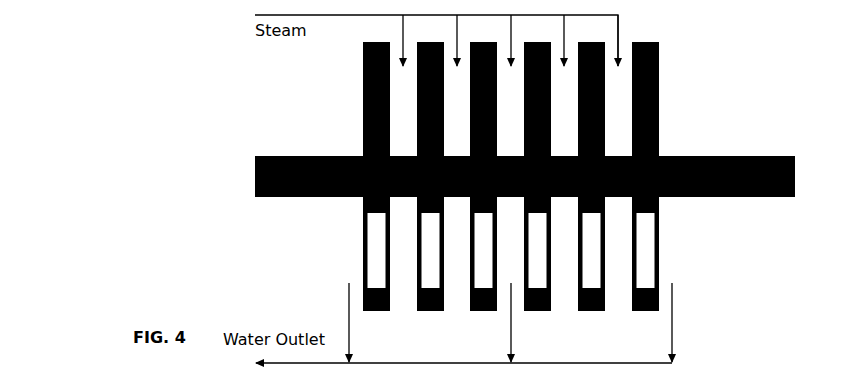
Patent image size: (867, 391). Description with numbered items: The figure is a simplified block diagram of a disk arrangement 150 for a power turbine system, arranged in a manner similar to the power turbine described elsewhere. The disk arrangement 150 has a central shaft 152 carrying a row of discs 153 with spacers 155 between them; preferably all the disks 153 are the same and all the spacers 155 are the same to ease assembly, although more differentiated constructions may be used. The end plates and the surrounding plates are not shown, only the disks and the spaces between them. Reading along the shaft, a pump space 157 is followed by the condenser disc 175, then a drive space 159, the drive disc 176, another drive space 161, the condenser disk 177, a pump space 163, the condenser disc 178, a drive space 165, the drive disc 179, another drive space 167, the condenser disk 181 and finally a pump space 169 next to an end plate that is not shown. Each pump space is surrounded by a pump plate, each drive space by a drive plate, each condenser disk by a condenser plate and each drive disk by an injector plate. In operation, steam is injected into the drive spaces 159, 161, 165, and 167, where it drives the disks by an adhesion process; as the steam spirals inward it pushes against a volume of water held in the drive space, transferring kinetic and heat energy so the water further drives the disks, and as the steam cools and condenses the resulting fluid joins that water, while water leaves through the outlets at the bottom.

The disk arrangement 150 is at (180, 113).
The central shaft 152 is at (310, 197).
The discs 153 is at (484, 311).
The spacers 155 is at (610, 197).
The pump space 157 is at (356, 73).
The drive space 159 is at (398, 100).
The drive space 161 is at (451, 115).
The pump space 163 is at (506, 135).
The drive space 165 is at (567, 115).
The drive space 167 is at (621, 88).
The pump space 169 is at (670, 62).
The condenser disc 175 is at (377, 250).
The drive disc 176 is at (430, 176).
The condenser disk 177 is at (483, 176).
The condenser disc 178 is at (537, 176).
The drive disc 179 is at (591, 176).
The condenser disk 181 is at (646, 250).